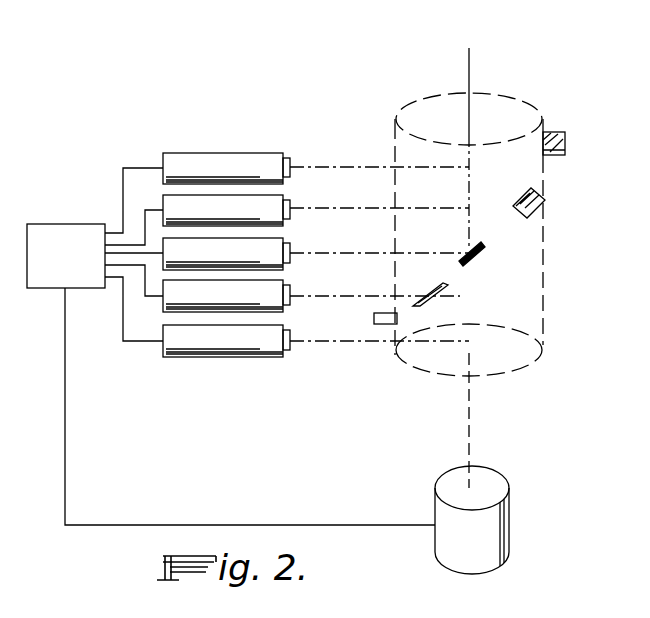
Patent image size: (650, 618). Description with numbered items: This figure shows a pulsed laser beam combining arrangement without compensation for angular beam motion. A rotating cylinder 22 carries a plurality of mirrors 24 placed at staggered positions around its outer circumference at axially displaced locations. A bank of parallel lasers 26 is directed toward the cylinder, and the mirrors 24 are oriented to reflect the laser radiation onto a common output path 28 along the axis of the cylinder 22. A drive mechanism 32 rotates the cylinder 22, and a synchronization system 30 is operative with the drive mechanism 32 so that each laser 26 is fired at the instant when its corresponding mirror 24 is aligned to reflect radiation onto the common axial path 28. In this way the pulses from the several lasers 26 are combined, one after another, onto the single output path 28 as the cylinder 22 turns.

The rotating cylinder 22 is at (544, 204).
The mirrors 24 is at (567, 142).
The parallel lasers 26 is at (240, 207).
The common output path 28 is at (469, 268).
The synchronization system 30 is at (68, 232).
The drive mechanism 32 is at (510, 516).